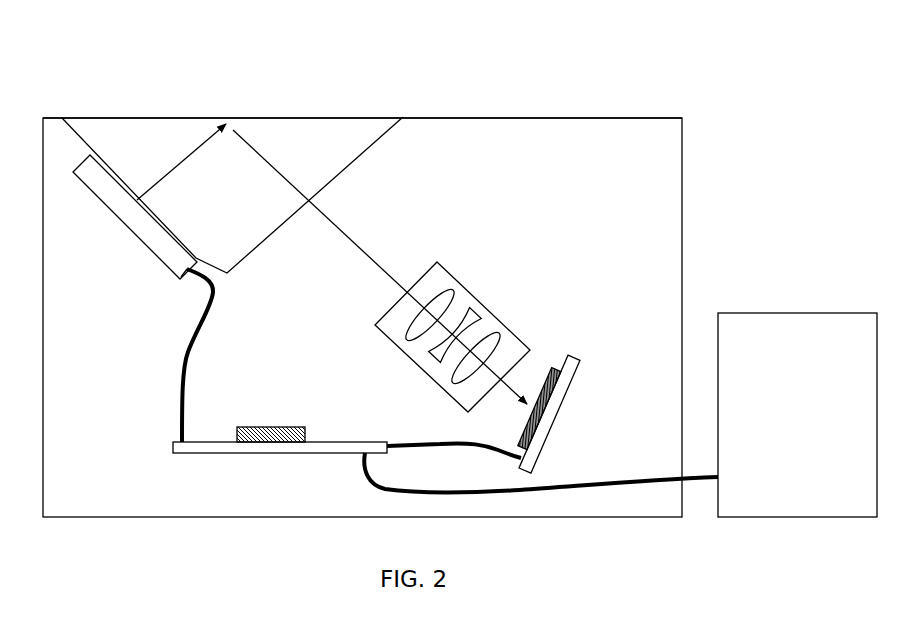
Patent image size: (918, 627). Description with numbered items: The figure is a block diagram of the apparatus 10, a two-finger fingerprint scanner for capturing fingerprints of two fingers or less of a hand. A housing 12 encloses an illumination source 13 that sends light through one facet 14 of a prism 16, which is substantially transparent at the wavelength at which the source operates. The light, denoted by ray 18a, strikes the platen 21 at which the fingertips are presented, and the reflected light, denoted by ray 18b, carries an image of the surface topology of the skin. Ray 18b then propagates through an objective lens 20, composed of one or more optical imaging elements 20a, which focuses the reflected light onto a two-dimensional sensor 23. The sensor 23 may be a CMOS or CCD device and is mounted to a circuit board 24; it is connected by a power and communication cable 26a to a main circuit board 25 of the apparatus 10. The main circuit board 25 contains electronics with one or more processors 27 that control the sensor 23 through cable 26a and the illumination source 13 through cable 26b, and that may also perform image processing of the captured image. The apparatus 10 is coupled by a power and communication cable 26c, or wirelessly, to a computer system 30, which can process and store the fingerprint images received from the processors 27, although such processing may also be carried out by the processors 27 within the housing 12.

The apparatus 10 is at (473, 82).
The housing 12 is at (682, 212).
The illumination source 13 is at (165, 252).
The facet 14 is at (122, 172).
The prism 16 is at (363, 138).
The ray 18a is at (173, 170).
The ray 18b is at (337, 225).
The objective lens 20 is at (433, 335).
The optical imaging element 20a is at (400, 335).
The platen 21 is at (313, 117).
The sensor 23 is at (539, 410).
The circuit board 24 is at (579, 387).
The main circuit board 25 is at (195, 445).
The power and communication cable 26a is at (435, 442).
The cable 26b is at (205, 328).
The power and communication cable 26c is at (593, 457).
The processor 27 is at (268, 425).
The computer system 30 is at (797, 415).